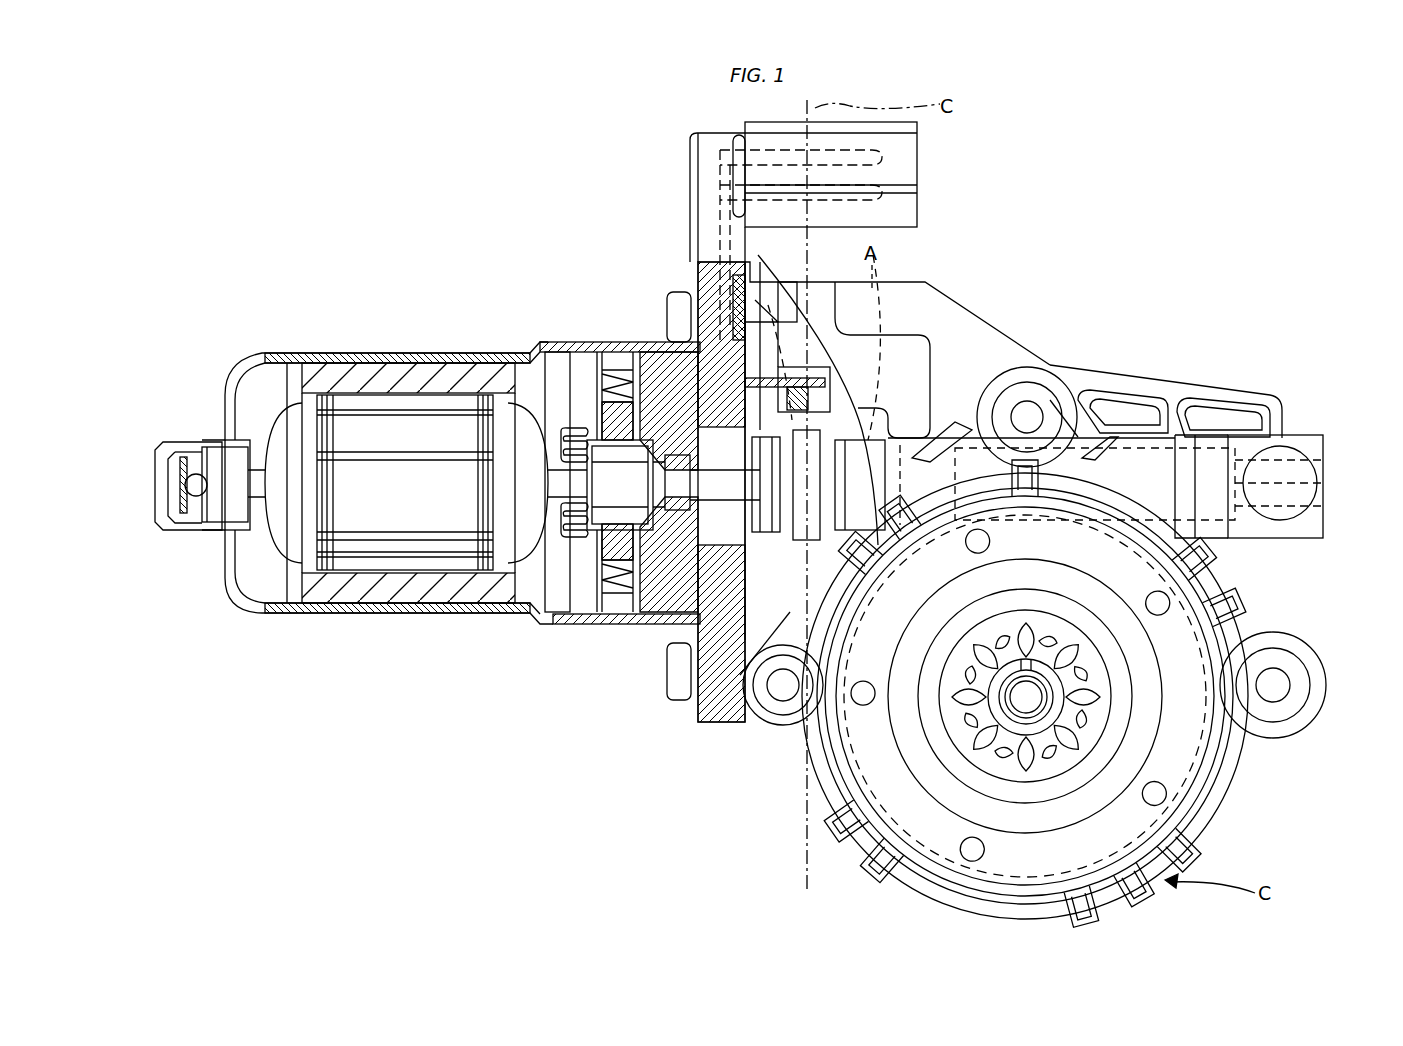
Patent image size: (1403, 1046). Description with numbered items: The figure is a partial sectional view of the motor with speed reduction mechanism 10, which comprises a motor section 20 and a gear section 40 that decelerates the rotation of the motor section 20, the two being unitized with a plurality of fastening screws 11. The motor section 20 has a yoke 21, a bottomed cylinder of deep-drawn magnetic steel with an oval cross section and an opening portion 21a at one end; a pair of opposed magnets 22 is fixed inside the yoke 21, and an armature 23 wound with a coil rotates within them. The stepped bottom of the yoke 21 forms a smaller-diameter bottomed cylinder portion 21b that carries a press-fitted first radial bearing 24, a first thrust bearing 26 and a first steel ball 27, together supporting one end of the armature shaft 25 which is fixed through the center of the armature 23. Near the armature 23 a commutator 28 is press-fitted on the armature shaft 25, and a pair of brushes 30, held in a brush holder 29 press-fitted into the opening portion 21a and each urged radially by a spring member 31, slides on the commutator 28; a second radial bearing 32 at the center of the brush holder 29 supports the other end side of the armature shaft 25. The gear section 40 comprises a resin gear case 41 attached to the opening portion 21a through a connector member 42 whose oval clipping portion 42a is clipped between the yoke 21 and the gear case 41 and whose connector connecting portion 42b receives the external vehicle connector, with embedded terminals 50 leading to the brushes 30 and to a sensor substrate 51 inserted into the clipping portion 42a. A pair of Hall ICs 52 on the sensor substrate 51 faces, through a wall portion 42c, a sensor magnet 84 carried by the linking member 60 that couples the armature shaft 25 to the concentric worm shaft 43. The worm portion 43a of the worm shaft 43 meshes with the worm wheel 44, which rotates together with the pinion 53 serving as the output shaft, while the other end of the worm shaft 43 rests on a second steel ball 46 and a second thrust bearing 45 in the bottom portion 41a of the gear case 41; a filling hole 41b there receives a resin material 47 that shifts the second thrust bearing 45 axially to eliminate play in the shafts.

The motor with speed reduction mechanism 10 is at (498, 225).
The fastening screws 11 is at (680, 298).
The motor section 20 is at (455, 346).
The yoke 21 is at (268, 612).
The opening portion 21a is at (636, 342).
The bottomed cylinder portion 21b is at (196, 440).
The magnets 22 is at (380, 376).
The armature 23 is at (343, 430).
The first radial bearing 24 is at (216, 466).
The armature shaft 25 is at (568, 538).
The first thrust bearing 26 is at (178, 488).
The first steel ball 27 is at (193, 496).
The commutator 28 is at (592, 532).
The brush holder 29 is at (650, 522).
The brushes 30 is at (568, 358).
The spring member 31 is at (612, 368).
The second radial bearing 32 is at (670, 512).
The gear section 40 is at (1183, 366).
The gear case 41 is at (1108, 378).
The bottom portion 41a is at (1320, 520).
The filling hole 41b is at (1318, 452).
The connector member 42 is at (682, 130).
The clipping portion 42a is at (725, 642).
The connector connecting portion 42b is at (918, 135).
The wall portion 42c is at (938, 345).
The worm shaft 43 is at (1032, 392).
The worm portion 43a is at (1040, 432).
The worm wheel 44 is at (1242, 618).
The second thrust bearing 45 is at (1320, 478).
The second steel ball 46 is at (1312, 486).
The resin material 47 is at (1312, 505).
The terminals 50 is at (925, 166).
The sensor substrate 51 is at (762, 376).
The Hall ICs 52 is at (812, 386).
The pinion 53 is at (1060, 700).
The linking member 60 is at (790, 560).
The sensor magnet 84 is at (775, 560).